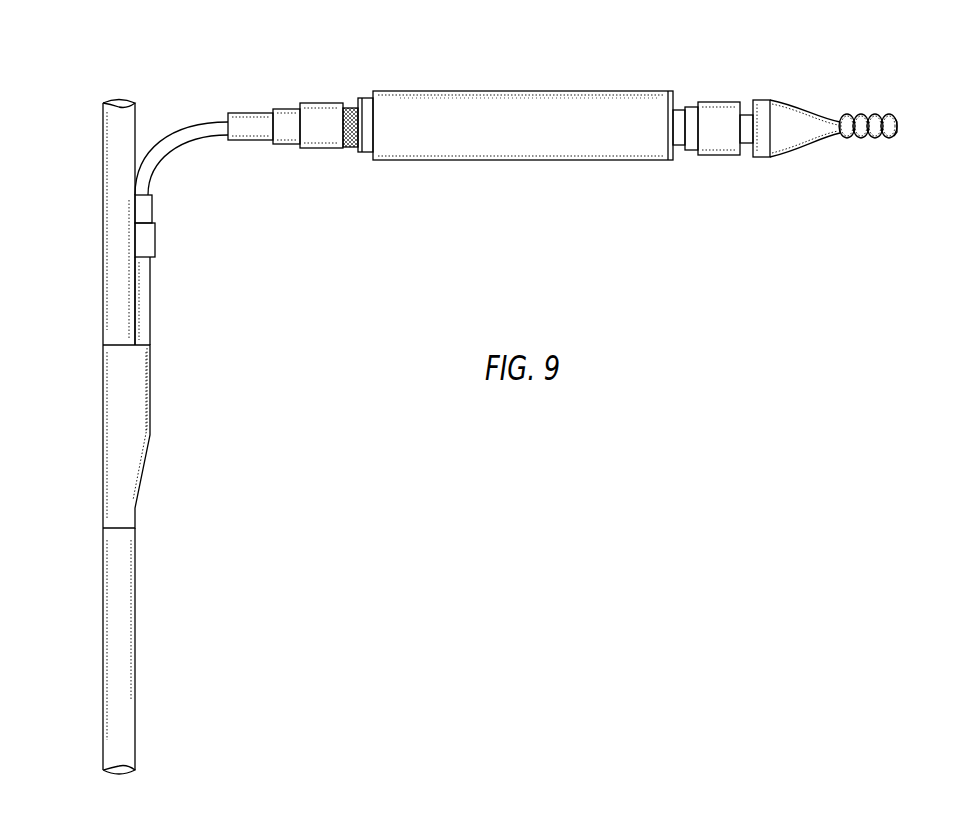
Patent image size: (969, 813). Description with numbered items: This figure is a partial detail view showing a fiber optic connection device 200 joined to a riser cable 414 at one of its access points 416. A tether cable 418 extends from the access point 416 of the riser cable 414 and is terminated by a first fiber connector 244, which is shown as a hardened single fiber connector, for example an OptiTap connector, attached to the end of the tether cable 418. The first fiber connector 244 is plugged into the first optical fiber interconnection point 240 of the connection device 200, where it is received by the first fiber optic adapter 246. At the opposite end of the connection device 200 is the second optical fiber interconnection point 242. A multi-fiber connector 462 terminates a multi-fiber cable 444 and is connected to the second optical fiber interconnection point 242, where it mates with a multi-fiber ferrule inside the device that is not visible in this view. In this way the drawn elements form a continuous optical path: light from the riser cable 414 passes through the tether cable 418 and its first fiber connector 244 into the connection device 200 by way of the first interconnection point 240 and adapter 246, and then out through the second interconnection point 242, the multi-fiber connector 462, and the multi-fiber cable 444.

The fiber optic connection device 200 is at (483, 92).
The first optical fiber interconnection point 240 is at (371, 152).
The second optical fiber interconnection point 242 is at (673, 92).
The first fiber connector 244 is at (322, 103).
The first fiber optic adapter 246 is at (367, 100).
The riser cable 414 is at (103, 600).
The access point 416 is at (152, 430).
The tether cable 418 is at (190, 122).
The multi-fiber cable 444 is at (853, 118).
The multi-fiber connector 462 is at (772, 103).